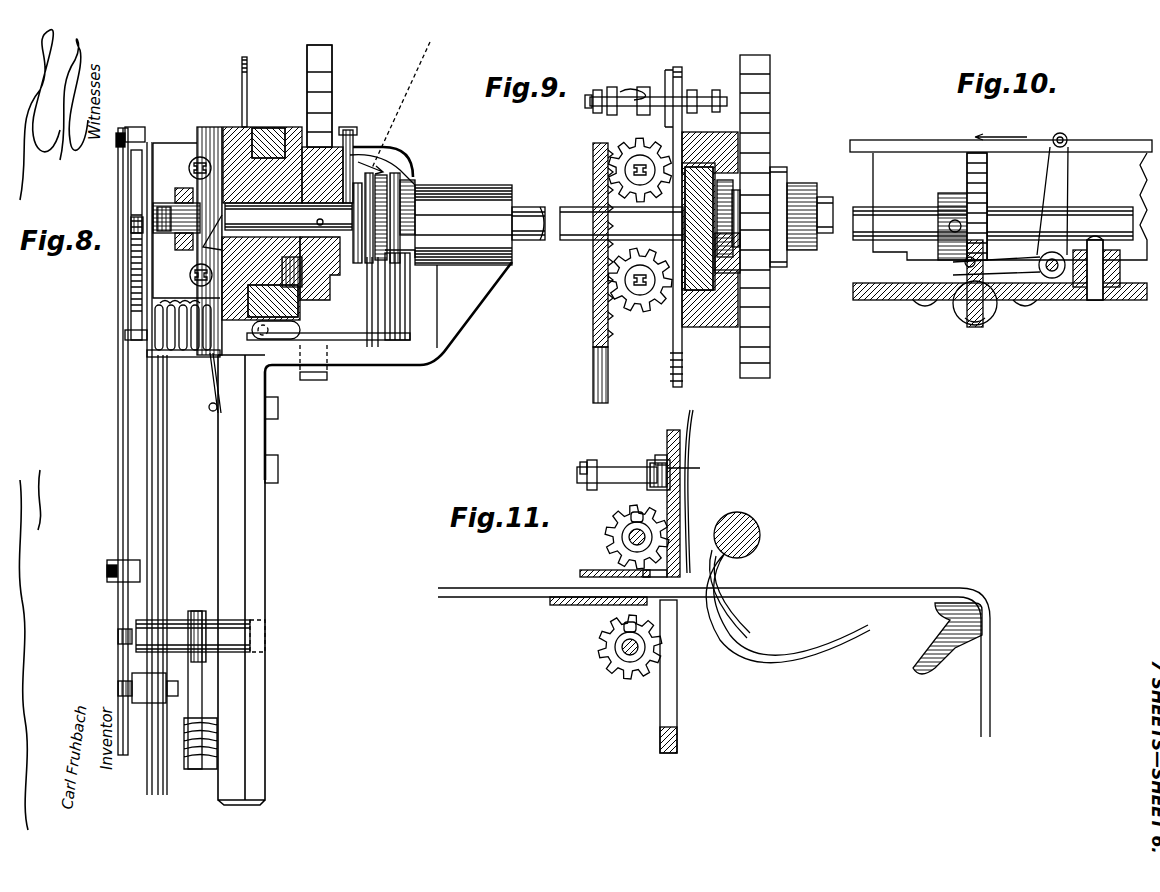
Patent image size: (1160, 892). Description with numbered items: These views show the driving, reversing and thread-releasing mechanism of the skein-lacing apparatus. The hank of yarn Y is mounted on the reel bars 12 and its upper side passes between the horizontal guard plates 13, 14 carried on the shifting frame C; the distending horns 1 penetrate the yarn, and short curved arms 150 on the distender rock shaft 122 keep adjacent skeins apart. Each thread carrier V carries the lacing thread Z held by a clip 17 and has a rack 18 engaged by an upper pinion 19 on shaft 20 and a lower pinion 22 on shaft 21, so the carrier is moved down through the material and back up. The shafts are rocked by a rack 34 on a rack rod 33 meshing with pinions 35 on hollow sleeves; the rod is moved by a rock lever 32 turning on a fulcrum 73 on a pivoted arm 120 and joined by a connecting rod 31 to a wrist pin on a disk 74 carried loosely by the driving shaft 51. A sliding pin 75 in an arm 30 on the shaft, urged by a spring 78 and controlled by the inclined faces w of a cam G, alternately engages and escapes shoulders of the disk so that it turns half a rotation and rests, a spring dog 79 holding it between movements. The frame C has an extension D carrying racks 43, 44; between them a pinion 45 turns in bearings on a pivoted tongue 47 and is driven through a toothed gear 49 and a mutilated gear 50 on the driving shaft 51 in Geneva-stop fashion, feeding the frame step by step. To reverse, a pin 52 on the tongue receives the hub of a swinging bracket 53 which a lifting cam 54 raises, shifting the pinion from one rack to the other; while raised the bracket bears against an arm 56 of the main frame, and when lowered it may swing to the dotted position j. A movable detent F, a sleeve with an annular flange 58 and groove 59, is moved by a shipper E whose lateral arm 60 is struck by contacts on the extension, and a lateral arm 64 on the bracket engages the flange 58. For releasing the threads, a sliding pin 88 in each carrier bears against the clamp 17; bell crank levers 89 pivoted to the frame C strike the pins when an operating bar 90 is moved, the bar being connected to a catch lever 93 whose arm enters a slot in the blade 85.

In FIG. 11, the distending horns 1 is at (752, 662).
In FIG. 11, the parallel bars 12 is at (990, 626).
In FIG. 11, the guard plate 13 is at (555, 605).
In FIG. 10, the guard plate 14 is at (1090, 163).
In FIG. 11, the guard plate 14 is at (580, 574).
In FIG. 10, the clip 17 is at (990, 315).
In FIG. 11, the clip 17 is at (687, 462).
In FIG. 10, the rack 18 is at (965, 315).
In FIG. 11, the rack 18 is at (705, 541).
In FIG. 10, the pinion 19 is at (967, 168).
In FIG. 11, the pinion 19 is at (600, 527).
In FIG. 9, the shaft 20 is at (621, 223).
In FIG. 10, the shaft 20 is at (873, 227).
In FIG. 11, the shaft 20 is at (623, 537).
In FIG. 11, the shaft 21 is at (620, 650).
In FIG. 11, the pinion 22 is at (622, 680).
In FIG. 8, the arm 30 is at (186, 188).
In FIG. 8, the connecting rod 31 is at (118, 432).
In FIG. 8, the rock lever 32 is at (130, 612).
In FIG. 8, the rack rod 33 is at (163, 528).
In FIG. 9, the rack rod 33 is at (593, 375).
In FIG. 9, the rack 34 is at (610, 327).
In FIG. 9, the pinions 35 is at (620, 167).
In FIG. 8, the rack 43 is at (290, 127).
In FIG. 9, the rack 43 is at (737, 170).
In FIG. 8, the rack 44 is at (293, 277).
In FIG. 9, the rack 44 is at (740, 283).
In FIG. 8, the pinion 45 is at (335, 278).
In FIG. 9, the pinion 45 is at (730, 253).
In FIG. 9, the tongue 47 is at (782, 167).
In FIG. 8, the toothed gear 49 is at (333, 62).
In FIG. 9, the toothed gear 49 is at (770, 75).
In FIG. 8, the mutilated gear 50 is at (310, 298).
In FIG. 8, the driving shaft 51 is at (527, 207).
In FIG. 8, the pin 52 is at (320, 268).
In FIG. 8, the swinging bracket 53 is at (346, 129).
In FIG. 8, the lifting cam 54 is at (322, 175).
In FIG. 8, the arm 56 is at (405, 172).
In FIG. 8, the annular flange 58 is at (395, 267).
In FIG. 8, the groove 59 is at (425, 185).
In FIG. 8, the lateral arm 60 is at (370, 340).
In FIG. 8, the lateral arm 64 is at (358, 170).
In FIG. 8, the fulcrum 73 is at (178, 622).
In FIG. 8, the disk 74 is at (135, 127).
In FIG. 8, the sliding pin 75 is at (132, 226).
In FIG. 8, the spring 78 is at (157, 215).
In FIG. 8, the spring dog 79 is at (145, 287).
In FIG. 9, the blade 85 is at (697, 87).
In FIG. 10, the sliding pin 88 is at (953, 268).
In FIG. 11, the sliding pin 88 is at (670, 483).
In FIG. 10, the bell crank levers 89 is at (1067, 183).
In FIG. 11, the bell crank levers 89 is at (587, 477).
In FIG. 9, the operating bar 90 is at (600, 103).
In FIG. 10, the operating bar 90 is at (900, 140).
In FIG. 11, the operating bar 90 is at (593, 463).
In FIG. 9, the catch lever 93 is at (632, 90).
In FIG. 8, the arm 120 is at (195, 695).
In FIG. 11, the rock shaft 122 is at (762, 545).
In FIG. 11, the curved arms 150 is at (750, 640).
In FIG. 8, the frame C is at (245, 57).
In FIG. 9, the frame C is at (678, 67).
In FIG. 11, the frame C is at (667, 437).
In FIG. 8, the extension D is at (270, 127).
In FIG. 8, the shipper E is at (395, 320).
In FIG. 8, the detent F is at (397, 250).
In FIG. 8, the cam G is at (205, 128).
In FIG. 10, the carrier V is at (975, 325).
In FIG. 11, the carrier V is at (690, 522).
In FIG. 11, the hank Y is at (892, 590).
In FIG. 11, the lacing thread Z is at (702, 491).
In FIG. 8, the dotted line j is at (402, 105).
In FIG. 8, the inclined faces w is at (205, 258).